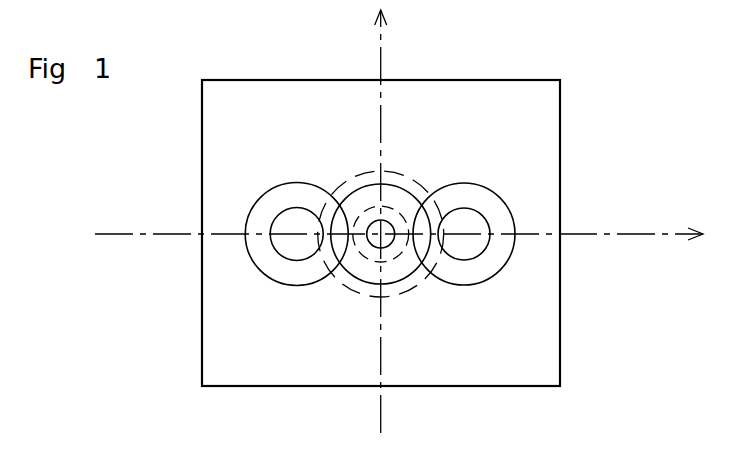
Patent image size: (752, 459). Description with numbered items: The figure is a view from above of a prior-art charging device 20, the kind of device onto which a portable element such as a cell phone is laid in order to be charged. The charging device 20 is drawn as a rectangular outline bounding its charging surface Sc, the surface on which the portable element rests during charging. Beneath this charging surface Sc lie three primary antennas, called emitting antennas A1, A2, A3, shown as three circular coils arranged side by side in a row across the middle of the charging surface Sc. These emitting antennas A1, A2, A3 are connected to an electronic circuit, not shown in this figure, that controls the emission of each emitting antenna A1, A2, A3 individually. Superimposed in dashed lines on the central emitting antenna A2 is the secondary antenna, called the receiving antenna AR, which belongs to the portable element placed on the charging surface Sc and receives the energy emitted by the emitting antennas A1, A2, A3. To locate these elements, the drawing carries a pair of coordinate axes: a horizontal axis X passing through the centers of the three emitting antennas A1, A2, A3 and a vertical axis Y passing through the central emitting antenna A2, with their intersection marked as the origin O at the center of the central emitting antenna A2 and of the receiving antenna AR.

The charging device 20 is at (530, 108).
The emitting antenna A1 is at (260, 218).
The emitting antenna A2 is at (386, 188).
The emitting antenna A3 is at (500, 219).
The receiving antenna AR is at (415, 183).
The charging surface Sc is at (548, 327).
The origin O is at (370, 219).
The X axis X is at (410, 234).
The Y axis Y is at (390, 221).